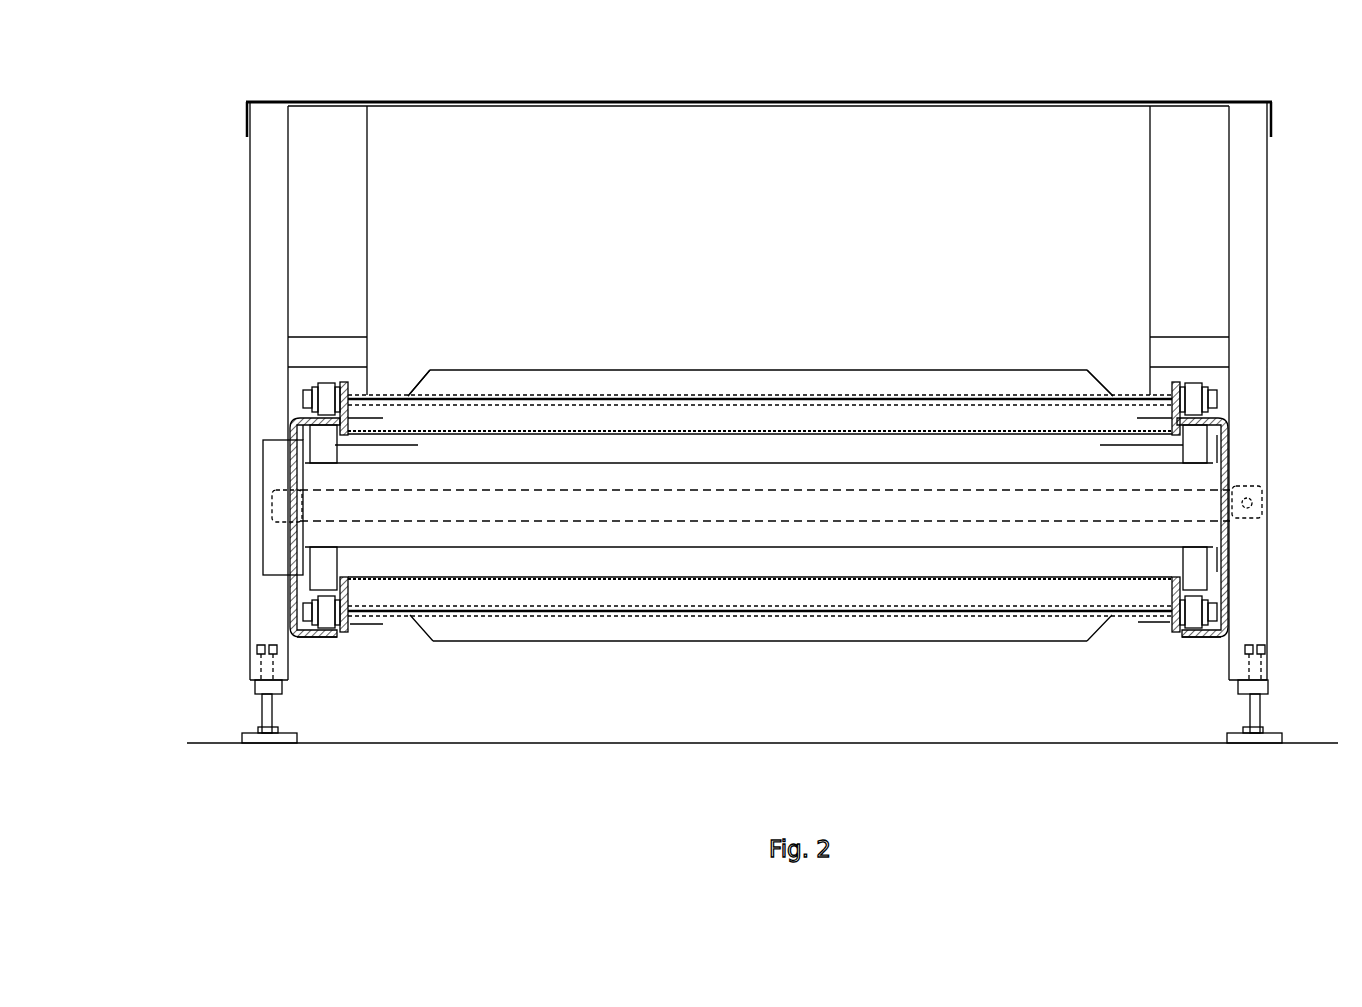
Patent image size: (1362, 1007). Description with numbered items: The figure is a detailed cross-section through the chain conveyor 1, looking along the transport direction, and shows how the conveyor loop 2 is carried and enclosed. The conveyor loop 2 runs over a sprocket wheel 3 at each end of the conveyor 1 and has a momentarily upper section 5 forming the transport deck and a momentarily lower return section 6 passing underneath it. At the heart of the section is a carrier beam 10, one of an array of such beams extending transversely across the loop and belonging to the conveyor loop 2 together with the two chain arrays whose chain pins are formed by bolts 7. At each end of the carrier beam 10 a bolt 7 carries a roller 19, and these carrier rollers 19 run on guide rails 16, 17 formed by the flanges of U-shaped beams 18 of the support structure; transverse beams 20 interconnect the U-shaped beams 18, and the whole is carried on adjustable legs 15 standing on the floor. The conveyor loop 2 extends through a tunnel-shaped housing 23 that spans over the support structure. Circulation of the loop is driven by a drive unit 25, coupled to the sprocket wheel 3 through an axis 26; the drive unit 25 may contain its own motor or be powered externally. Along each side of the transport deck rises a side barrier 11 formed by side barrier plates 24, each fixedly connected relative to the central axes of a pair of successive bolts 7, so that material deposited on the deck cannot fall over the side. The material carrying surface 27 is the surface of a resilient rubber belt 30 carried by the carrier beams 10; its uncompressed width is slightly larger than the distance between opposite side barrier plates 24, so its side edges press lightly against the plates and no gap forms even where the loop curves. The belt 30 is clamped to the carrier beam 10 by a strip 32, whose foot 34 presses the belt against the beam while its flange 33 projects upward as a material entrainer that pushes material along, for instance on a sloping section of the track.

The chain conveyor 1 is at (838, 70).
The conveyor loop 2 is at (968, 353).
The sprocket wheel 3 is at (418, 445).
The upper section 5 is at (859, 396).
The lower return section 6 is at (859, 616).
The bolt 7 is at (303, 396).
The carrier beam 10 is at (733, 432).
The side barrier 11 is at (343, 380).
The adjustable leg 15 is at (252, 667).
The guide rail 16 is at (290, 428).
The guide rail 17 is at (312, 640).
The U-shaped beam 18 is at (283, 551).
The roller 19 is at (323, 383).
The transverse beam 20 is at (504, 547).
The tunnel-shaped housing 23 is at (967, 98).
The side barrier plate 24 is at (383, 418).
The drive unit 25 is at (263, 471).
The axis 26 is at (1242, 483).
The material carrying surface 27 is at (563, 400).
The rubber belt 30 is at (567, 612).
The strip 32 is at (629, 368).
The flange 33 is at (718, 390).
The foot 34 is at (775, 398).